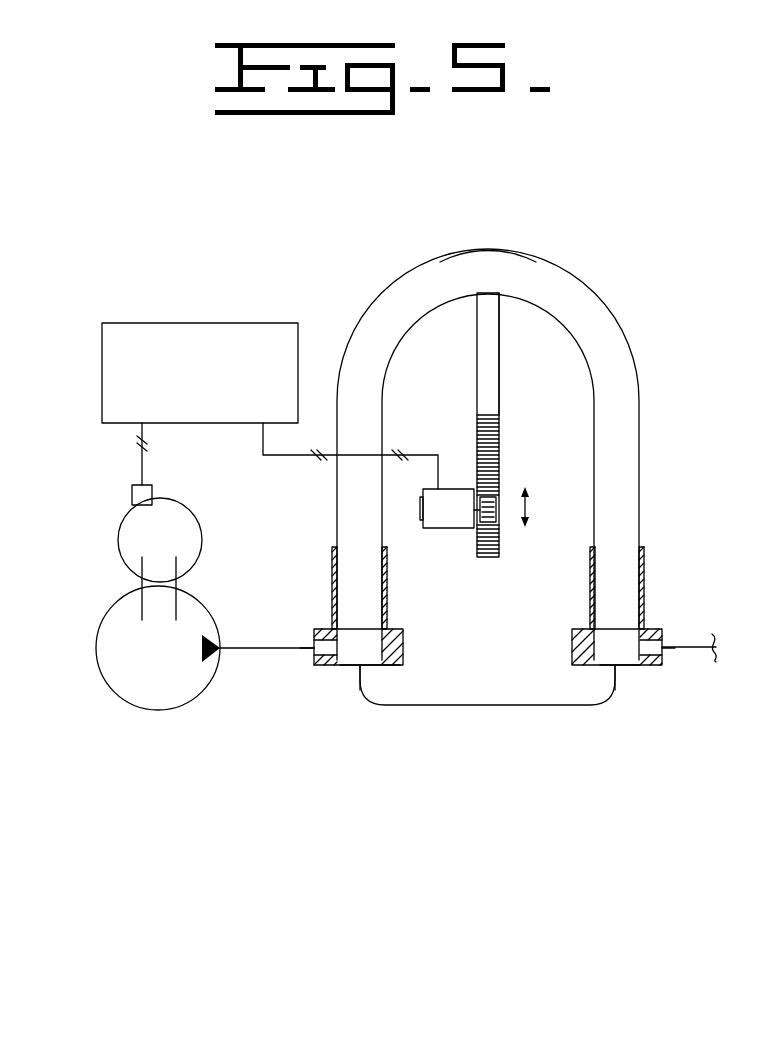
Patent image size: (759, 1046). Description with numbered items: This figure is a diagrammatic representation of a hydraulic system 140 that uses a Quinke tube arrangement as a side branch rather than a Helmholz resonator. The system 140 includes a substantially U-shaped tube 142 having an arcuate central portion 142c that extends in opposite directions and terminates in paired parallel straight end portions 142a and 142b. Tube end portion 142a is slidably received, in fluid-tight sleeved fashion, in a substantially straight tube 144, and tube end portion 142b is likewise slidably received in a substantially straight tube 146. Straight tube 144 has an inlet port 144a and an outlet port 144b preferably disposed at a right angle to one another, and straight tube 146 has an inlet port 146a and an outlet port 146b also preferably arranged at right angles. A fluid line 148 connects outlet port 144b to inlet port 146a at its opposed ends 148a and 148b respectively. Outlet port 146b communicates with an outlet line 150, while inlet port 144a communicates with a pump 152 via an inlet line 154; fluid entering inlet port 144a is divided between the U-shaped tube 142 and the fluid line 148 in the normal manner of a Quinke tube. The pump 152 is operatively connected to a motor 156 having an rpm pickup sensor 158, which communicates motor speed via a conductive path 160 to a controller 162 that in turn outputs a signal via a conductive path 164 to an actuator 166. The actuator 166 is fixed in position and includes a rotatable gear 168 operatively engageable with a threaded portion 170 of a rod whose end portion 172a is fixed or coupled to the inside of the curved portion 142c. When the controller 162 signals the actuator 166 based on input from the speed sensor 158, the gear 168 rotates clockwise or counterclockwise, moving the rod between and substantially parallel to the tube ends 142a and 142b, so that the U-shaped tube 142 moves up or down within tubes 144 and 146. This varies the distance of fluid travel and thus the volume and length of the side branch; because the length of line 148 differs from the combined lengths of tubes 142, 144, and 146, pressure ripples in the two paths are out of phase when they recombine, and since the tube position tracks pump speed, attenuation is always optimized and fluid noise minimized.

The hydraulic system 140 is at (481, 400).
The U-shaped tube 142 is at (540, 265).
The tube end portion 142a is at (333, 570).
The tube end portion 142b is at (640, 570).
The arcuate central portion 142c is at (484, 266).
The straight tube 144 is at (386, 612).
The inlet port 144a is at (316, 636).
The outlet port 144b is at (375, 665).
The straight tube 146 is at (591, 605).
The inlet port 146a is at (633, 665).
The outlet port 146b is at (662, 665).
The fluid line 148 is at (467, 705).
The end of fluid line 148a is at (360, 680).
The end of fluid line 148b is at (615, 670).
The outlet line 150 is at (686, 647).
The pump 152 is at (138, 689).
The inlet line 154 is at (273, 650).
The motor 156 is at (178, 503).
The rpm pickup sensor 158 is at (132, 494).
The conductive path 160 is at (140, 460).
The controller 162 is at (182, 333).
The conductive path 164 is at (272, 457).
The actuator 166 is at (458, 490).
The rotatable gear 168 is at (497, 510).
The threaded portion 170 is at (492, 385).
The rod end portion 172a is at (501, 298).